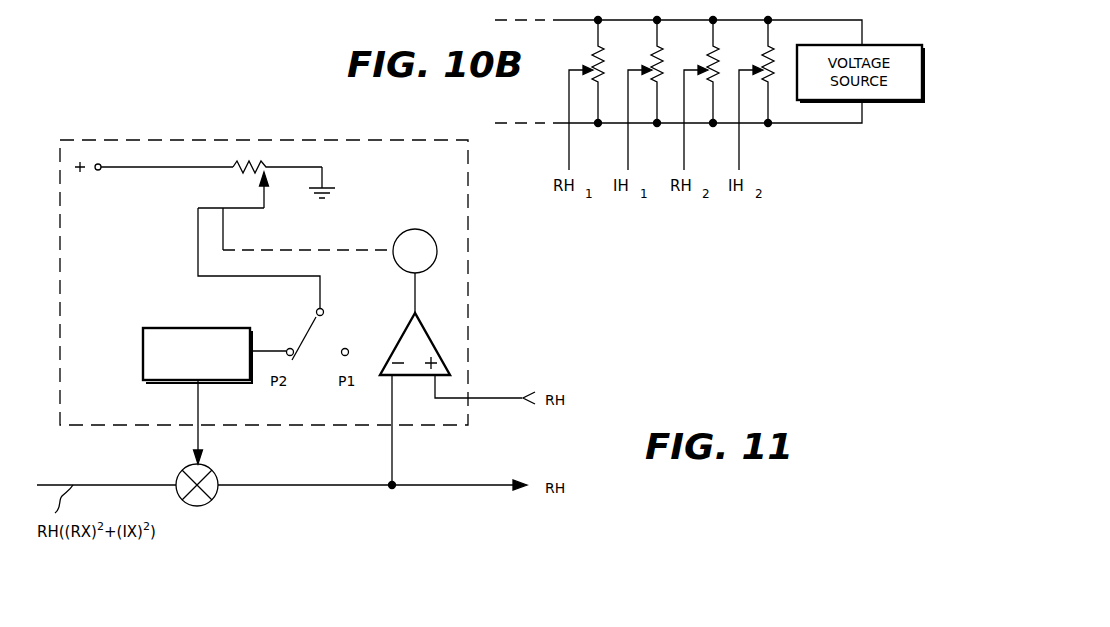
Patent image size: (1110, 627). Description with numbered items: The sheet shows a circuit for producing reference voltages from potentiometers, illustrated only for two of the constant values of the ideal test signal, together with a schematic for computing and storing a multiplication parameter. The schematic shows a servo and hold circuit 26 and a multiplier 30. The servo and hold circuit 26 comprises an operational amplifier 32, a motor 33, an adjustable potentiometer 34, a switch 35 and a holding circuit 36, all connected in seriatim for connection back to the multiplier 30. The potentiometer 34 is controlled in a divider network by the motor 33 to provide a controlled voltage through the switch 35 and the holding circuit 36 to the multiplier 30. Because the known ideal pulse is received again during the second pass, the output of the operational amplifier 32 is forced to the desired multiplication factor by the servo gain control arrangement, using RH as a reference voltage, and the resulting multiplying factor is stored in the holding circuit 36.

The servo and hold circuit 26 is at (152, 140).
The multiplier 30 is at (214, 476).
The operational amplifier 32 is at (401, 321).
The motor 33 is at (410, 229).
The adjustable potentiometer 34 is at (243, 210).
The switch 35 is at (302, 317).
The holding circuit 36 is at (180, 330).